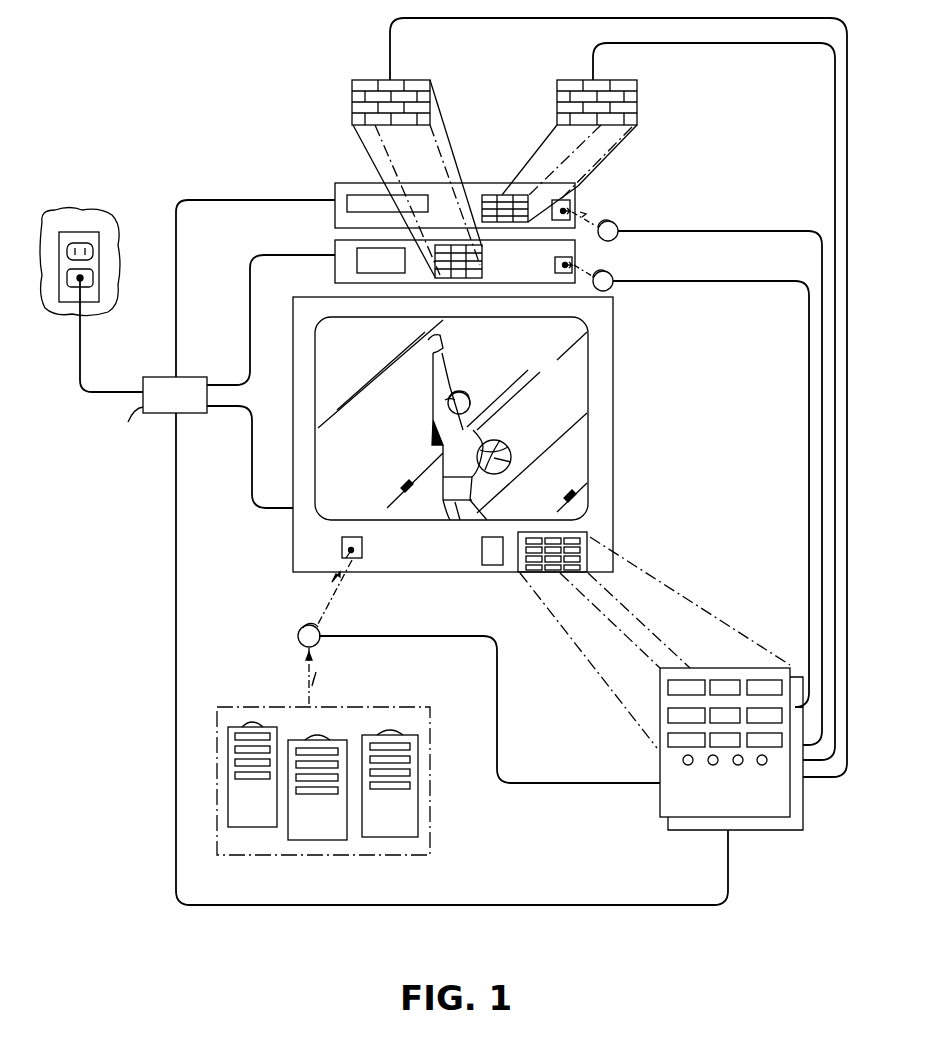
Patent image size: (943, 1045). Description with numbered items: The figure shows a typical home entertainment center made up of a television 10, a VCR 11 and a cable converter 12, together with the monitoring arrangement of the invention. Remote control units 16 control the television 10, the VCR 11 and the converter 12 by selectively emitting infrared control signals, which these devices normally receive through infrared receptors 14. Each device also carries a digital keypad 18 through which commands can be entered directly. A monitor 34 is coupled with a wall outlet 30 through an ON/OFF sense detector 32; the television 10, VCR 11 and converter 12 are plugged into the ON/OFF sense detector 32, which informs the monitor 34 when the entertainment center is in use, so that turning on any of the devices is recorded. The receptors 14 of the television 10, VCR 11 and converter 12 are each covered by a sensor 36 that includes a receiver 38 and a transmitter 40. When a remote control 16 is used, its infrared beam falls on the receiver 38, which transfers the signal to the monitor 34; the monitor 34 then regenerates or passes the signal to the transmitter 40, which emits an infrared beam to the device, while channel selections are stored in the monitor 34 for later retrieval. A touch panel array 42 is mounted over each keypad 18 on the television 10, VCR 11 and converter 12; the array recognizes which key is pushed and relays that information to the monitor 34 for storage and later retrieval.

The television 10 is at (293, 400).
The VCR 11 is at (338, 184).
The cable converter 12 is at (335, 248).
The infrared receptor 14 is at (575, 203).
The remote control unit 16 is at (393, 707).
The digital keypad 18 is at (497, 195).
The wall outlet 30 is at (95, 232).
The ON/OFF sense detector 32 is at (196, 411).
The monitor 34 is at (758, 824).
The sensor 36 is at (451, 445).
The receiver 38 is at (618, 230).
The transmitter 40 is at (601, 222).
The touch panel array 42 is at (427, 82).